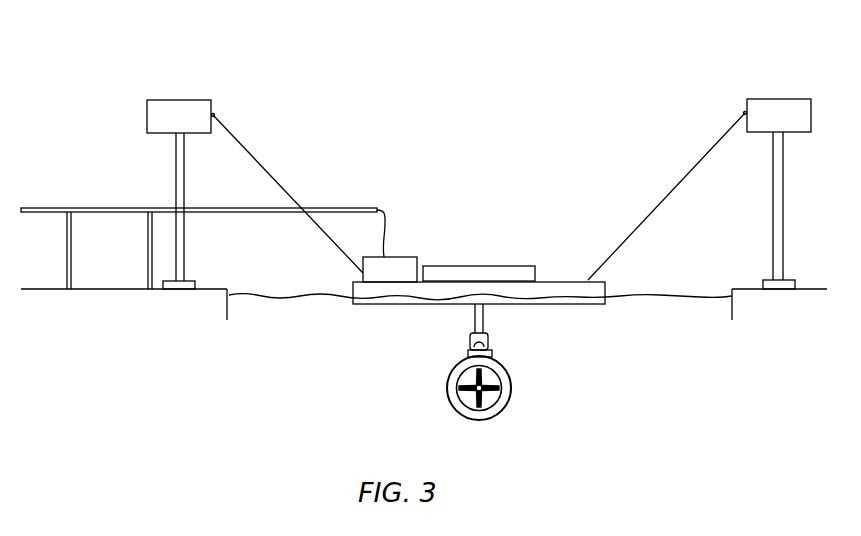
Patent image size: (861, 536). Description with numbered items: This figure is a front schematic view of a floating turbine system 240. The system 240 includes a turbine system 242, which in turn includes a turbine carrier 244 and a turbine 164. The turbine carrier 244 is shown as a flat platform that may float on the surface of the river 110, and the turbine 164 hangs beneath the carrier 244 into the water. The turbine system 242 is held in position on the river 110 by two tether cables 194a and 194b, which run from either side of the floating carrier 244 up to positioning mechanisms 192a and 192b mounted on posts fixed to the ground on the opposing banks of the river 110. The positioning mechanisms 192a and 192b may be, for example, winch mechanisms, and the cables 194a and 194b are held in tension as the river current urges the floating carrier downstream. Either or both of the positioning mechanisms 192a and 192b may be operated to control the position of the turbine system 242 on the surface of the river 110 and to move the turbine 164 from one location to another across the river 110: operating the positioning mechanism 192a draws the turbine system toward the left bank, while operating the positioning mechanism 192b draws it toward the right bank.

The river 110 is at (424, 277).
The positioning mechanism 192a is at (179, 194).
The positioning mechanism 192b is at (779, 194).
The tether cable 194a is at (278, 147).
The tether cable 194b is at (668, 191).
The system 240 is at (490, 184).
The turbine system 242 is at (508, 248).
The turbine carrier 244 is at (395, 305).
The turbine 164 is at (522, 386).